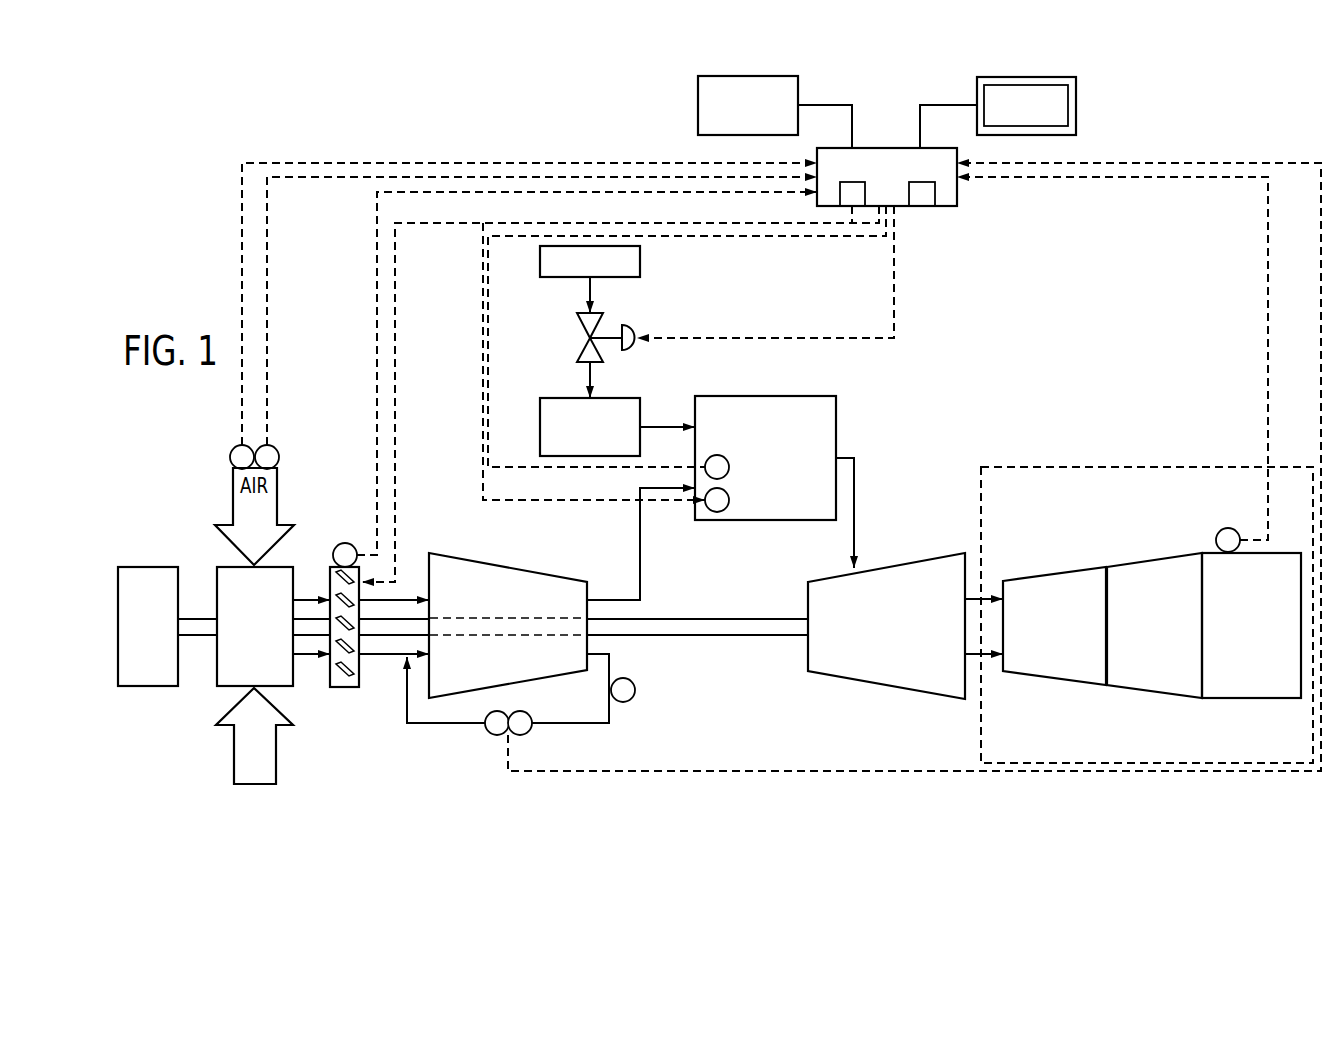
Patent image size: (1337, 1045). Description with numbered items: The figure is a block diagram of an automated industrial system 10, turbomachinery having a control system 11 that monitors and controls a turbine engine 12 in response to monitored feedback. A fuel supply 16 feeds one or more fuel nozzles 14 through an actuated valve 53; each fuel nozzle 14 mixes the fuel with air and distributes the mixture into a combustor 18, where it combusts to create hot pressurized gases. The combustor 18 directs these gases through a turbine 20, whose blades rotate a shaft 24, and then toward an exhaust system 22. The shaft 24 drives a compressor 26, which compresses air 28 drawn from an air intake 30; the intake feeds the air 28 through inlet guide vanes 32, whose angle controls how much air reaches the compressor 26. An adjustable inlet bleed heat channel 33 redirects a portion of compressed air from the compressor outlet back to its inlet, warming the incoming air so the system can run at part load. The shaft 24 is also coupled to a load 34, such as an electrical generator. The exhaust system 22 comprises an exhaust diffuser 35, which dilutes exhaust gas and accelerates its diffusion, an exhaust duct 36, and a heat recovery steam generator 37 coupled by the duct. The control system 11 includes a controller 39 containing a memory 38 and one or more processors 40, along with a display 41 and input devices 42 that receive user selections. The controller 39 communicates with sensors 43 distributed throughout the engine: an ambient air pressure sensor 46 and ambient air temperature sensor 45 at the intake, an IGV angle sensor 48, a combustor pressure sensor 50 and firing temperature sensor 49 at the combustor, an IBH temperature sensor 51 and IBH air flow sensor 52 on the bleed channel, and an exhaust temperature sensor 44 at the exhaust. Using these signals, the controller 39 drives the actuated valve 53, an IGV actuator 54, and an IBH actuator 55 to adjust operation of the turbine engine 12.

The automated industrial system 10 is at (450, 752).
The control system 11 is at (410, 152).
The turbine engine 12 is at (882, 372).
The fuel nozzle 14 is at (540, 430).
The fuel supply 16 is at (640, 262).
The combustor 18 is at (760, 396).
The turbine 20 is at (883, 567).
The exhaust system 22 is at (1076, 772).
The shaft 24 is at (697, 637).
The compressor 26 is at (510, 568).
The air 28 is at (278, 757).
The air intake 30 is at (233, 689).
The inlet guide vanes 32 is at (362, 672).
The inlet bleed heat channel 33 is at (611, 718).
The load 34 is at (148, 567).
The exhaust diffuser 35 is at (1052, 575).
The exhaust duct 36 is at (1150, 560).
The heat recovery steam generator 37 is at (1285, 553).
The memory 38 is at (840, 190).
The controller 39 is at (873, 148).
The processor 40 is at (935, 205).
The display 41 is at (1076, 105).
The input devices 42 is at (698, 108).
The sensors 43 is at (231, 460).
The exhaust temperature sensor 44 is at (1237, 530).
The ambient air temperature sensor 45 is at (275, 447).
The ambient air pressure sensor 46 is at (235, 447).
The IGV angle sensor 48 is at (333, 555).
The firing temperature sensor 49 is at (727, 512).
The combustor pressure sensor 50 is at (730, 463).
The IBH temperature sensor 51 is at (485, 730).
The IBH air flow sensor 52 is at (527, 712).
The actuated valve 53 is at (578, 325).
The IGV actuator 54 is at (375, 578).
The IBH actuator 55 is at (634, 683).